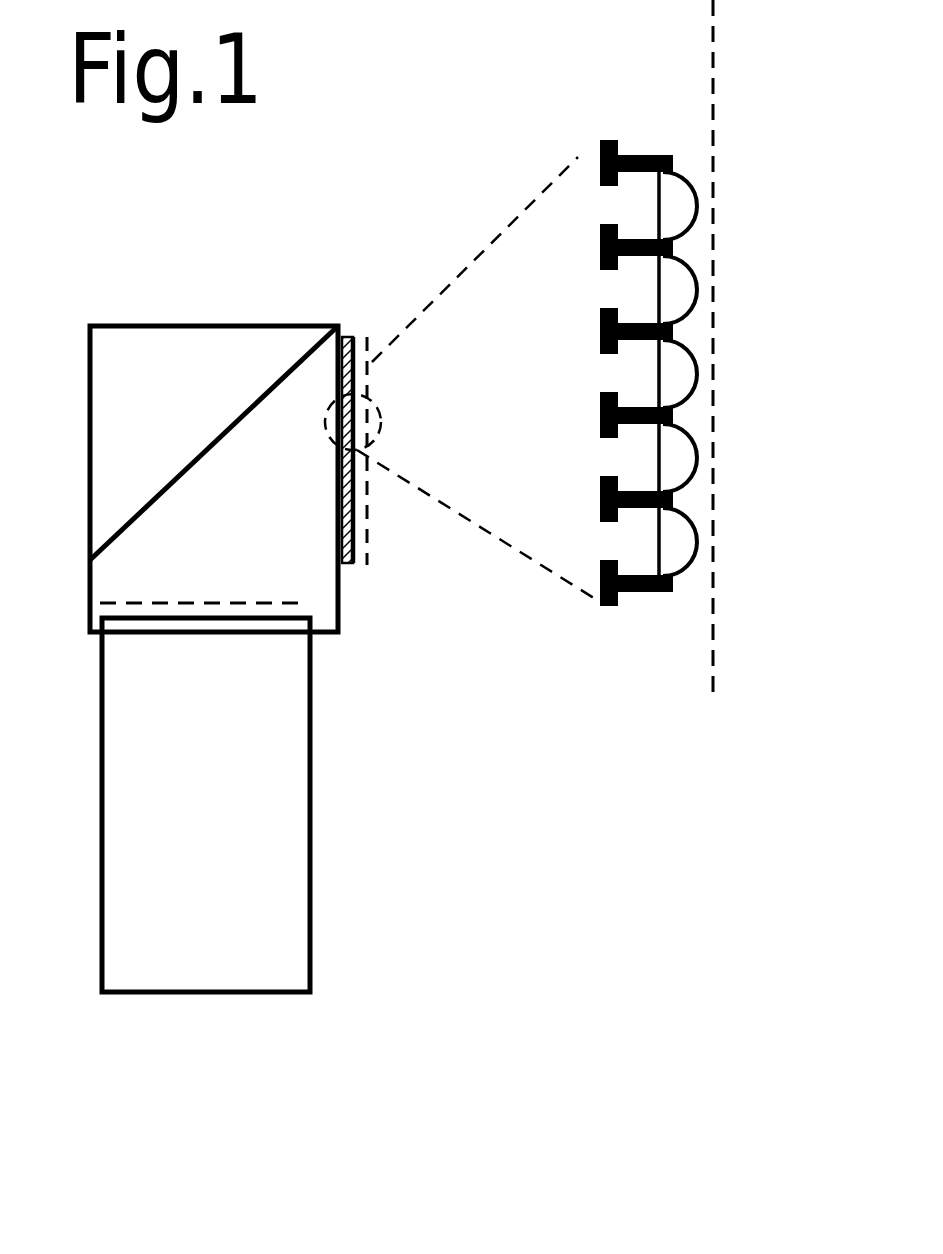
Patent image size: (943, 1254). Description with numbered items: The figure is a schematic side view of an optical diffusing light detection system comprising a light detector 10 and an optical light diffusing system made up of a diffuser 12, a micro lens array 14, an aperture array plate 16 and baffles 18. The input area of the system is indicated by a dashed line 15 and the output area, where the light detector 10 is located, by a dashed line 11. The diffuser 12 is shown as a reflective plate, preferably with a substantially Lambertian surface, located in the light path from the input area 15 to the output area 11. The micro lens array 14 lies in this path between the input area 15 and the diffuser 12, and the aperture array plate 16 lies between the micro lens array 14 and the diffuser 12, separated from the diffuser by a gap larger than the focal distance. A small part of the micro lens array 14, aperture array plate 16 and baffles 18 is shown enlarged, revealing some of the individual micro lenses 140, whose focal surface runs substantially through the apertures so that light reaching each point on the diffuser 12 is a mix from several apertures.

The light detector 10 is at (252, 993).
The output area 11 is at (145, 603).
The diffuser 12 is at (232, 422).
The micro lens array 14 is at (672, 128).
The input area 15 is at (367, 533).
The aperture array plate 16 is at (603, 128).
The baffles 18 is at (643, 153).
The micro lenses 140 is at (697, 218).